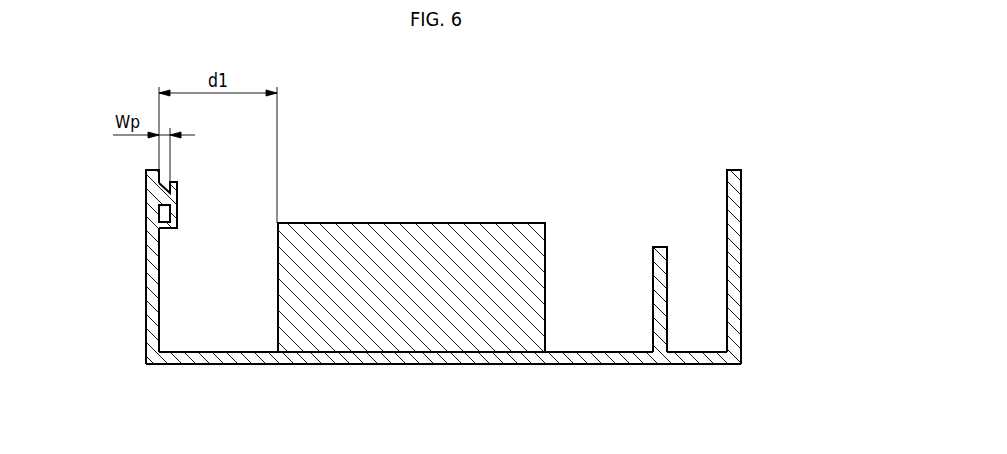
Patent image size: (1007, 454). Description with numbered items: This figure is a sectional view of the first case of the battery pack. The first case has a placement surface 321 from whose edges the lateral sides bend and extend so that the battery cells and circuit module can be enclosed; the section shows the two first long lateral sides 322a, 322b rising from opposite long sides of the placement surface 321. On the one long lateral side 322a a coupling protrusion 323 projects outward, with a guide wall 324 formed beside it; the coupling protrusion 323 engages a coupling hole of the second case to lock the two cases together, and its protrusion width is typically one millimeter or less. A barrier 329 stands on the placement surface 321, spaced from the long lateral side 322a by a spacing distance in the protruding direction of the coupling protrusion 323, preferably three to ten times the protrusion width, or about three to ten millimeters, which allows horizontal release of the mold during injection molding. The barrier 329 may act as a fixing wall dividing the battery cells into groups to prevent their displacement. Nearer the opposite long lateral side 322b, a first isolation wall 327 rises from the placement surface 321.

The placement surface 321 is at (482, 357).
The first long lateral side 322a is at (150, 302).
The first long lateral side 322b is at (735, 234).
The coupling protrusion 323 is at (168, 195).
The guide wall 324 is at (165, 222).
The first isolation wall 327 is at (665, 325).
The barrier 329 is at (383, 333).